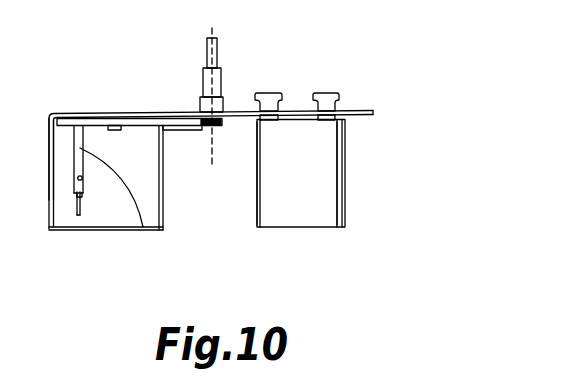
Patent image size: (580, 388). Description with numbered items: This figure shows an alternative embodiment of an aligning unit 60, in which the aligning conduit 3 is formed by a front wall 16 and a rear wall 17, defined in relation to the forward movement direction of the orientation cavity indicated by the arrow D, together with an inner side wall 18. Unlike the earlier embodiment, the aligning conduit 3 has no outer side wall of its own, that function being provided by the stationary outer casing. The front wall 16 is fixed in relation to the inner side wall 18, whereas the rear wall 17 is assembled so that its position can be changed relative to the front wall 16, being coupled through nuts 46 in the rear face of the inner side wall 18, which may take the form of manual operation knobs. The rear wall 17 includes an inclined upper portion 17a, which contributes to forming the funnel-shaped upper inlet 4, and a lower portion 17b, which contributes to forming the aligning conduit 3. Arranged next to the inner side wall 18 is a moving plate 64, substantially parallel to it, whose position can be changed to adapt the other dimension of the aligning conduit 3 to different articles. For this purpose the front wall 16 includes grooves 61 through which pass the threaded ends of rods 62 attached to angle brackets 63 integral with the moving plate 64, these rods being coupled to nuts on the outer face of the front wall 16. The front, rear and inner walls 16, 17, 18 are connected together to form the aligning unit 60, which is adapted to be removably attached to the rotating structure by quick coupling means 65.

The front wall 16 is at (50, 160).
The rear wall 17 is at (297, 232).
The inclined upper portion 17a is at (328, 163).
The lower portion 17b is at (257, 178).
The inner side wall 18 is at (122, 111).
The nuts 46 is at (263, 95).
The aligning unit 60 is at (243, 86).
The grooves 61 is at (77, 205).
The rods 62 is at (83, 180).
The angle brackets 63 is at (163, 150).
The moving plate 64 is at (137, 127).
The quick coupling means 65 is at (206, 56).
The aligning conduit 3 is at (245, 162).
The funnel-shaped upper inlet 4 is at (193, 200).
The forward movement direction arrow D is at (178, 297).